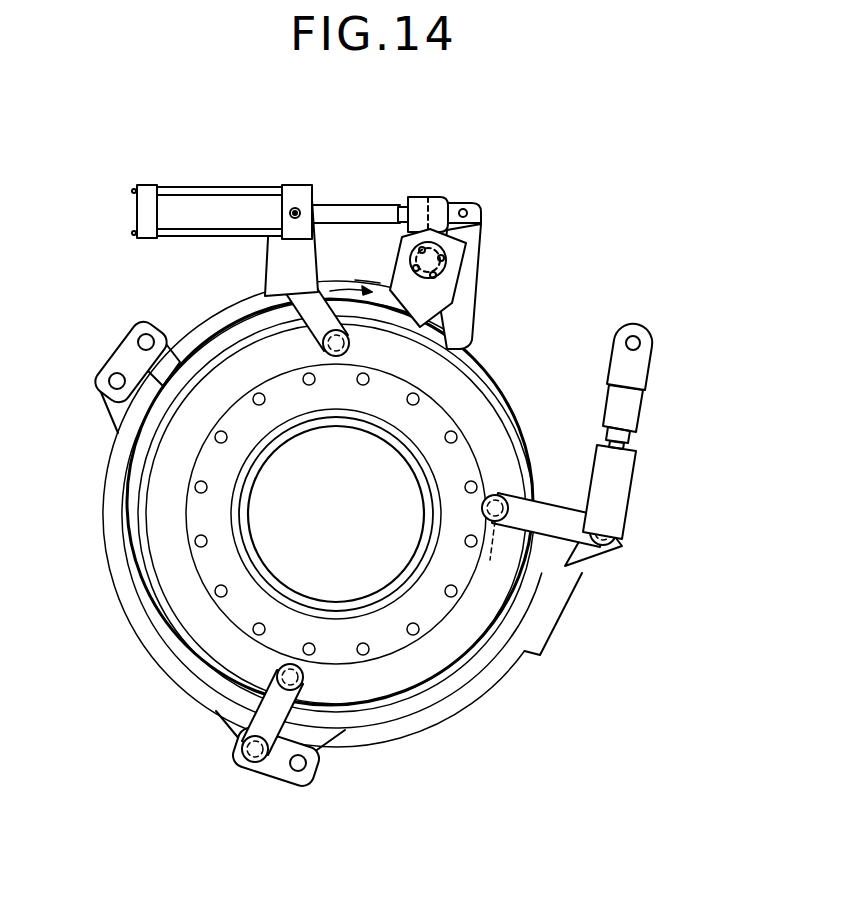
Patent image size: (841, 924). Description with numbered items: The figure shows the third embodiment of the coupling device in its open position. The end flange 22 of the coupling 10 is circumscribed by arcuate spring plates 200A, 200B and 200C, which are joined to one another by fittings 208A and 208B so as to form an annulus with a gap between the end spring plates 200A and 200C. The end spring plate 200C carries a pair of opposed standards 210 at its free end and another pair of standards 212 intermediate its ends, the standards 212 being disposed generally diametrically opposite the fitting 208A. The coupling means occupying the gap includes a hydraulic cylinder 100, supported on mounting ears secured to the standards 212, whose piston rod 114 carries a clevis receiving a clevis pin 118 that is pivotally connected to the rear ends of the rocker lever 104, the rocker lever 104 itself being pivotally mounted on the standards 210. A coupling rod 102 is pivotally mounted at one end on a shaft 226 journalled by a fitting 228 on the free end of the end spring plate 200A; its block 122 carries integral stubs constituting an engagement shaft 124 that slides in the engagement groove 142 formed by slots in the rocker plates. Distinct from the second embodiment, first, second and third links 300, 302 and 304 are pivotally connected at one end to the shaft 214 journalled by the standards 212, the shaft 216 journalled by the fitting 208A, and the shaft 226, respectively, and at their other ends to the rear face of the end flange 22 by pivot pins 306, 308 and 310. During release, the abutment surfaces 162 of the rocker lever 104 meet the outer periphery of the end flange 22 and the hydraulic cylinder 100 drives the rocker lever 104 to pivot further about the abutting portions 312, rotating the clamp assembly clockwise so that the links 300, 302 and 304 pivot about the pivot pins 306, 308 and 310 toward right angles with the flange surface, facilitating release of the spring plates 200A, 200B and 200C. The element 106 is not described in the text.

The coupling 10 is at (510, 455).
The end flange 22 is at (482, 412).
The hydraulic cylinder 100 is at (225, 213).
The coupling rod 102 is at (622, 445).
The rocker lever 104 is at (478, 292).
The cylinder clevis 106 is at (300, 205).
The piston rod 114 is at (362, 210).
The clevis pin 118 is at (468, 203).
The block 122 is at (630, 380).
The engagement shaft 124 is at (428, 197).
The engagement groove 142 is at (467, 263).
The abutment surfaces 162 is at (455, 337).
The end spring plate 200A is at (480, 705).
The spring plate 200B is at (125, 585).
The end spring plate 200C is at (220, 335).
The fitting 208A is at (300, 785).
The fitting 208B is at (120, 352).
The standards 210 is at (380, 292).
The standards 212 is at (268, 255).
The shaft 214 is at (272, 284).
The shaft 216 is at (250, 765).
The shaft 226 is at (618, 540).
The fitting 228 is at (592, 560).
The first link 300 is at (350, 343).
The second link 302 is at (240, 740).
The third link 304 is at (542, 515).
The pivot pin 306 is at (322, 348).
The pivot pin 308 is at (303, 682).
The pivot pin 310 is at (496, 541).
The abutting portions 312 is at (423, 360).